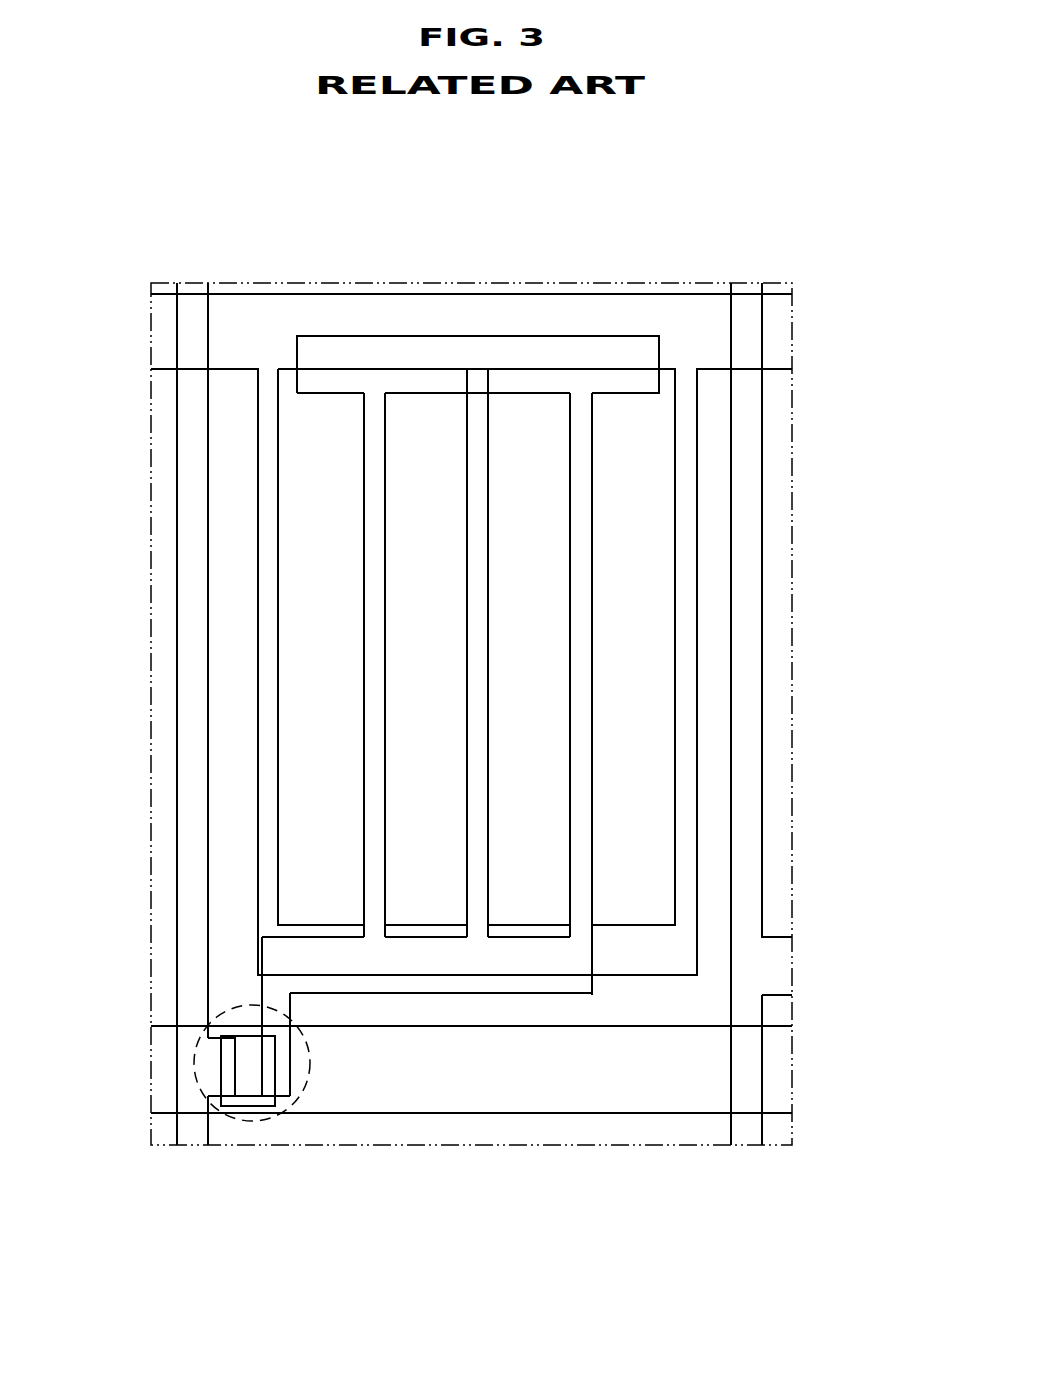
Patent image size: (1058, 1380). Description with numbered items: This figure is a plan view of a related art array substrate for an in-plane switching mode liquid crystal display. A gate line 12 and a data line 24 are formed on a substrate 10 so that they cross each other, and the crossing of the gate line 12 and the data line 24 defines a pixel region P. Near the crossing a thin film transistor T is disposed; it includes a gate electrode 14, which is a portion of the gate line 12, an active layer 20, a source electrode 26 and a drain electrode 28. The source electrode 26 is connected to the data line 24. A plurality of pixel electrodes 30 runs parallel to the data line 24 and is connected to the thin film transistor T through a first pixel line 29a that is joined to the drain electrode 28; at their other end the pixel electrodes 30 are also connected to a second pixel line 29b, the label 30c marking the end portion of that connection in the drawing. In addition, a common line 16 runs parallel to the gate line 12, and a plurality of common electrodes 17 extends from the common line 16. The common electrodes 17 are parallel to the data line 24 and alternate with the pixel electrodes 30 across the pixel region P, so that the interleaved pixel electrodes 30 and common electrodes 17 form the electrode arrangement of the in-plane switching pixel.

The substrate 10 is at (793, 700).
The gate line 12 is at (582, 1113).
The gate electrode 14 is at (236, 1113).
The common line 16 is at (645, 295).
The common electrodes 17 is at (684, 903).
The active layer 20 is at (247, 1035).
The data line 24 is at (177, 698).
The source electrode 26 is at (229, 1052).
The drain electrode 28 is at (292, 1083).
The first pixel line 29a is at (468, 995).
The second pixel line 29b is at (487, 347).
The pixel electrodes 30 is at (583, 815).
The contact portion of pixel electrode 30c is at (660, 357).
The pixel region P is at (765, 512).
The thin film transistor T is at (265, 1122).